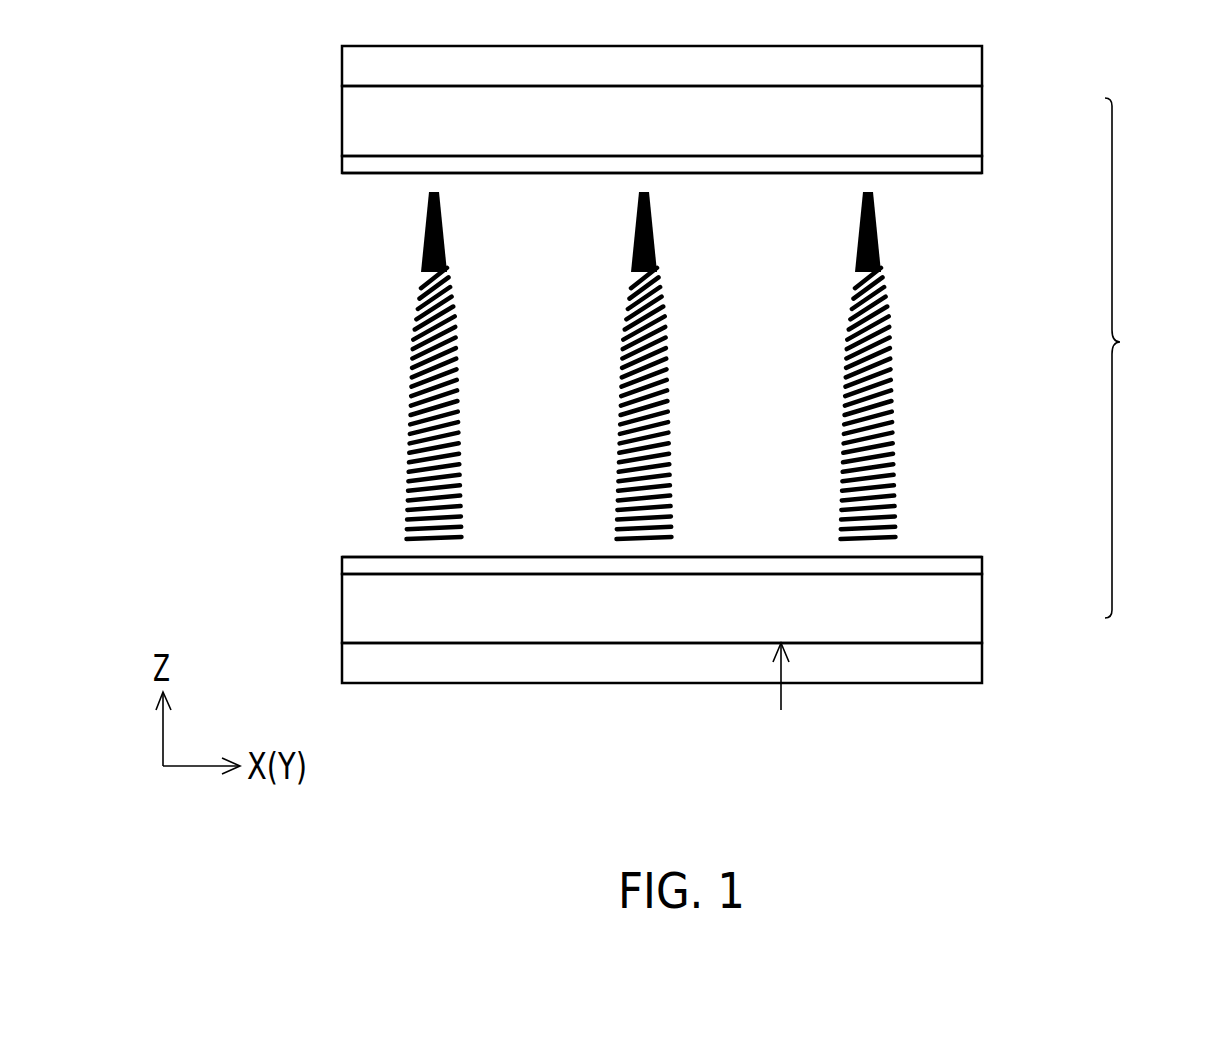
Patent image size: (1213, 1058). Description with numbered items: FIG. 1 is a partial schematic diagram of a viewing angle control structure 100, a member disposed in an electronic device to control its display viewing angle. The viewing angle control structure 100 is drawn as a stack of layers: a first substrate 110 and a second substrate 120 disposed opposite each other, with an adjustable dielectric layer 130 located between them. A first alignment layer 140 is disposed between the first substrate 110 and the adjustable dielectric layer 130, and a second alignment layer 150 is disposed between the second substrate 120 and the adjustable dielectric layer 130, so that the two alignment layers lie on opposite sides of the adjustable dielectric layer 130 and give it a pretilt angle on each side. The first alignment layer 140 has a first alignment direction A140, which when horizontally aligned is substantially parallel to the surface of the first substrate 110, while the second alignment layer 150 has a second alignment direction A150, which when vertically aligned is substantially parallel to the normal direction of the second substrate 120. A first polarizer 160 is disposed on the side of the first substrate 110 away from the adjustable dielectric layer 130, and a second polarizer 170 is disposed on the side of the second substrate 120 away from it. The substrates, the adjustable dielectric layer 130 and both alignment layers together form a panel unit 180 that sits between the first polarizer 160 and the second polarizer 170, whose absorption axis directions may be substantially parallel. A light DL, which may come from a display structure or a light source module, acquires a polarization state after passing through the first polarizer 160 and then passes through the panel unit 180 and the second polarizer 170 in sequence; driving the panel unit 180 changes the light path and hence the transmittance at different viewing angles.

The viewing angle control structure 100 is at (762, 406).
The first substrate 110 is at (972, 610).
The second substrate 120 is at (972, 124).
The adjustable dielectric layer 130 is at (886, 362).
The first alignment layer 140 is at (972, 565).
The second alignment layer 150 is at (972, 163).
The first polarizer 160 is at (972, 665).
The second polarizer 170 is at (972, 63).
The panel unit 180 is at (1137, 358).
The first alignment direction A140 is at (961, 554).
The second alignment direction A150 is at (948, 176).
The light DL is at (781, 700).